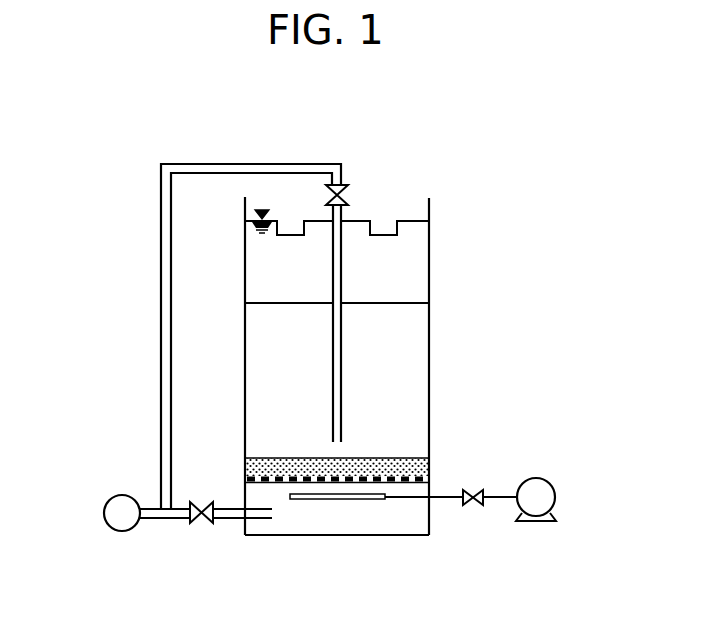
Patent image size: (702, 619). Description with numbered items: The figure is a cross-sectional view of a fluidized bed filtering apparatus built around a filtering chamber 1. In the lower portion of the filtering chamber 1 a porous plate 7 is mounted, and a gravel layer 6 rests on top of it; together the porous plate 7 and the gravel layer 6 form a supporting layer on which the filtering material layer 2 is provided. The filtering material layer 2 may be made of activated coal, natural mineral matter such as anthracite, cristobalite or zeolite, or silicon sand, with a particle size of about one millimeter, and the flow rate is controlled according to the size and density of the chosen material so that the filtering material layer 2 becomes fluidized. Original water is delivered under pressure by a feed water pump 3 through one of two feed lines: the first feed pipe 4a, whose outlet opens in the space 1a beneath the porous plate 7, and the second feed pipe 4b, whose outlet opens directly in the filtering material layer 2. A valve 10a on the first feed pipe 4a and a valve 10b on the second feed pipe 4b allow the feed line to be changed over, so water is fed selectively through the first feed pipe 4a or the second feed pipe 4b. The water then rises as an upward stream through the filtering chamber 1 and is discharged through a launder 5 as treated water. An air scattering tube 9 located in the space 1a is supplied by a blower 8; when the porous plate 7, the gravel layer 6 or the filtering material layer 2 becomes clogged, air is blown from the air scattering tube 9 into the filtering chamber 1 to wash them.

The filtering chamber 1 is at (429, 265).
The space 1a is at (402, 528).
The filtering material layer 2 is at (419, 358).
The feed water pump 3 is at (102, 511).
The first feed pipe 4a is at (232, 520).
The second feed pipe 4b is at (248, 165).
The launder 5 is at (397, 220).
The gravel layer 6 is at (430, 463).
The porous plate 7 is at (430, 481).
The blower 8 is at (556, 497).
The air scattering tube 9 is at (330, 500).
The valve 10a is at (205, 521).
The valve 10b is at (348, 196).